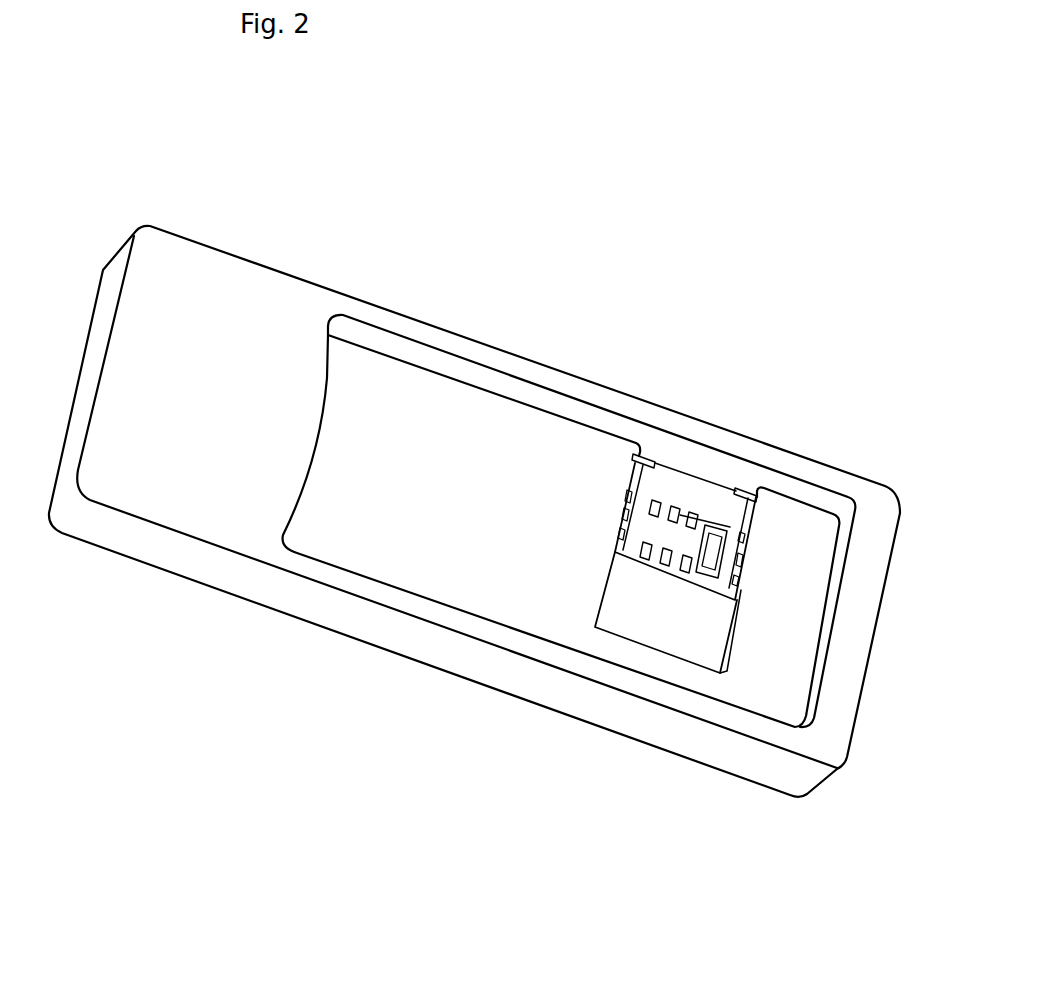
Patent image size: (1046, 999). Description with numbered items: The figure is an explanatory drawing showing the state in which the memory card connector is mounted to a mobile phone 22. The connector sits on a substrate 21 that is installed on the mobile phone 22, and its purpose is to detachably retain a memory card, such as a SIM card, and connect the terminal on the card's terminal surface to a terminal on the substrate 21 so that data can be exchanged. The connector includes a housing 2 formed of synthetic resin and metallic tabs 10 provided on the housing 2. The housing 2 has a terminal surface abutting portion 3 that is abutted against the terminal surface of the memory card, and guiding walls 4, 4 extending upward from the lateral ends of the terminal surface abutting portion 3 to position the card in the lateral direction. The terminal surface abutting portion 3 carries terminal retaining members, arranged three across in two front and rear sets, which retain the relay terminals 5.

The housing 2 is at (690, 549).
The terminal surface abutting portion 3 is at (665, 508).
The guiding wall 4 is at (642, 455).
The relay terminal 5 is at (668, 522).
The metallic tab 10 is at (630, 477).
The substrate 21 is at (705, 490).
The mobile phone 22 is at (363, 622).